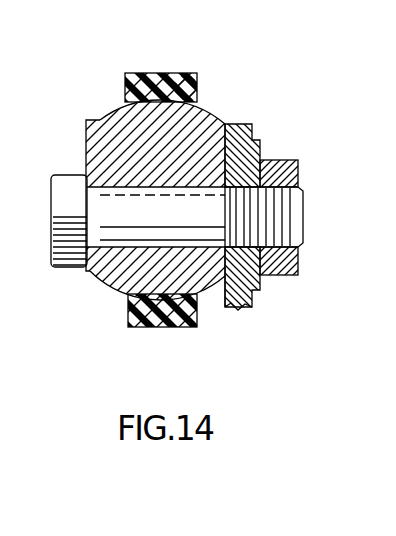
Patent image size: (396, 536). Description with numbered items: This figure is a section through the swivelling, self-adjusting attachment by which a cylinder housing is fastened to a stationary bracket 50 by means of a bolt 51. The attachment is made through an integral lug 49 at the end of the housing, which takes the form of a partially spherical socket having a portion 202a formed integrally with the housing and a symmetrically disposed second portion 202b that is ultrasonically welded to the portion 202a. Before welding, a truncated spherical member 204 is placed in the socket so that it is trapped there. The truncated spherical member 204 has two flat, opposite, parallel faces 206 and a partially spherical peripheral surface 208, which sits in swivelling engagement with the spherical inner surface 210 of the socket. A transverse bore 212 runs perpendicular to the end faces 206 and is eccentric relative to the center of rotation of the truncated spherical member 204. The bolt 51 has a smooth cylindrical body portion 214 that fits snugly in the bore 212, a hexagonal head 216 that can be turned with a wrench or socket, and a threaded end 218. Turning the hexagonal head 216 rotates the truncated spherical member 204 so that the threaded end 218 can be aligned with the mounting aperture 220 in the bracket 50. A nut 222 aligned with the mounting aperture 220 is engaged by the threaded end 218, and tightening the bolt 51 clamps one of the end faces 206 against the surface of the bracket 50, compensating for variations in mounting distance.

The integral lug 49 is at (159, 70).
The stationary bracket 50 is at (241, 306).
The bolt 51 is at (156, 200).
The socket portion 202a is at (125, 79).
The second socket portion 202b is at (199, 86).
The truncated spherical member 204 is at (100, 126).
The flat faces 206 is at (87, 159).
The partially spherical peripheral surface 208 is at (105, 118).
The spherical inner surface 210 is at (200, 293).
The transverse bore 212 is at (104, 277).
The smooth cylindrical body portion 214 is at (147, 186).
The hexagonal head 216 is at (63, 238).
The threaded end 218 is at (288, 221).
The mounting aperture 220 is at (280, 177).
The nut 222 is at (297, 268).